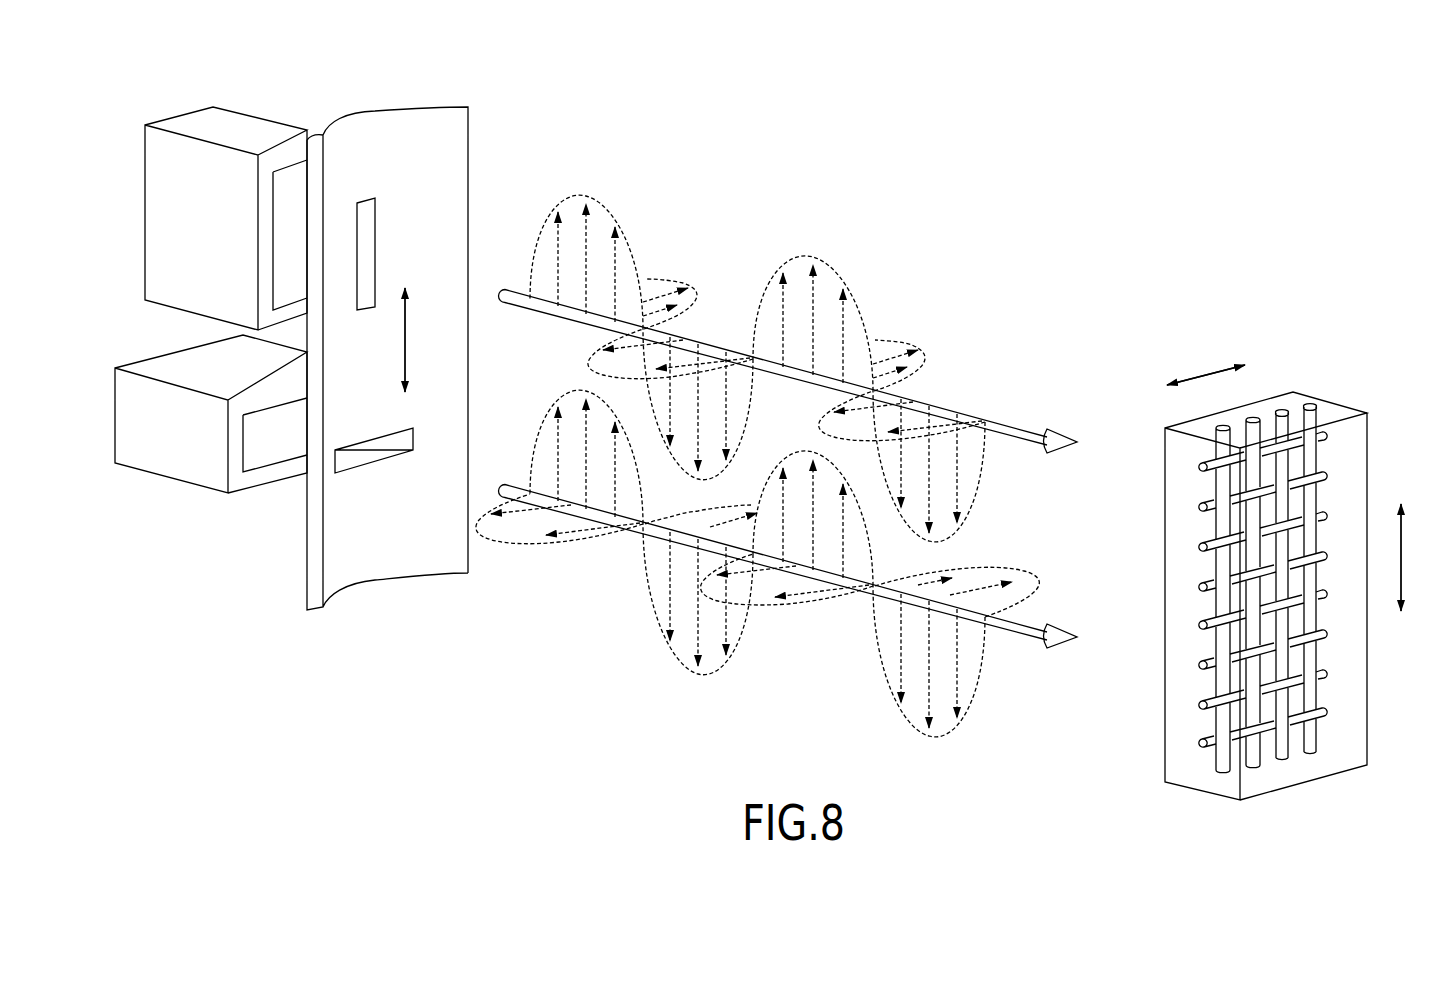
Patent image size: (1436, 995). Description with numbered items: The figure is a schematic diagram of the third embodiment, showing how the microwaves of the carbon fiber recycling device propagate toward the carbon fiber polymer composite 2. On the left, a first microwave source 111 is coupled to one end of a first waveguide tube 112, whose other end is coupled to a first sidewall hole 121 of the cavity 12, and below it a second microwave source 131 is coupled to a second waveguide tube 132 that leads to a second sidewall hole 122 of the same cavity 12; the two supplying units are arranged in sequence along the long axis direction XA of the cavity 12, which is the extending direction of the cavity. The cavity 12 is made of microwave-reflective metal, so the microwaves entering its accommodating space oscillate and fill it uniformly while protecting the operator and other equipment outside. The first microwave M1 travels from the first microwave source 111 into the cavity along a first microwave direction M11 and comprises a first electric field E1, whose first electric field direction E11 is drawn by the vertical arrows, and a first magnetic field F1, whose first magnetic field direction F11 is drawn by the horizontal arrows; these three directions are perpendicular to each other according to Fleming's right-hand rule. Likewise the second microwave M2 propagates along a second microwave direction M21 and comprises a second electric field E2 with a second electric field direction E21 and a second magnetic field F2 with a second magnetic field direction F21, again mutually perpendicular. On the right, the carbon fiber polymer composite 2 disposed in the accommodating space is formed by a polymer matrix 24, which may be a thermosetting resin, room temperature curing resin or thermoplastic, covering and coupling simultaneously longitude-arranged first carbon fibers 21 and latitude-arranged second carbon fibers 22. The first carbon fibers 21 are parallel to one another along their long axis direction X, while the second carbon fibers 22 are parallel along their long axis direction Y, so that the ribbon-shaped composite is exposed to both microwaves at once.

The cavity 12 is at (445, 122).
The first microwave source 111 is at (165, 170).
The first waveguide tube 112 is at (288, 240).
The first sidewall hole 121 is at (365, 230).
The second sidewall hole 122 is at (358, 452).
The second microwave source 131 is at (188, 470).
The second waveguide tube 132 is at (293, 468).
The carbon fiber polymer composite 2 is at (1262, 574).
The first carbon fiber 21 is at (1327, 698).
The second carbon fiber 22 is at (1200, 710).
The polymer matrix 24 is at (1352, 447).
The first electric field E1 is at (757, 355).
The first electric field direction E11 is at (610, 267).
The first magnetic field F1 is at (742, 360).
The first magnetic field direction F11 is at (590, 352).
The first microwave M1 is at (825, 383).
The first microwave direction M11 is at (1079, 447).
The second electric field E2 is at (695, 563).
The second electric field direction E21 is at (548, 540).
The second magnetic field F2 is at (757, 591).
The second magnetic field direction F21 is at (707, 657).
The second microwave M2 is at (824, 573).
The second microwave direction M21 is at (1079, 640).
The long axis direction XA is at (435, 340).
The long axis direction X is at (1418, 557).
The long axis direction Y is at (1206, 360).